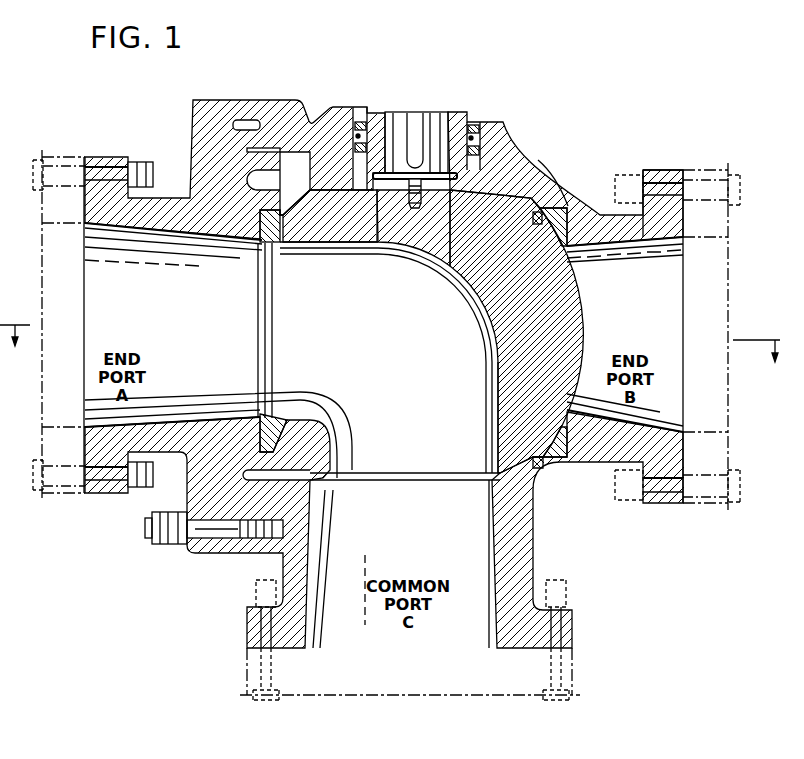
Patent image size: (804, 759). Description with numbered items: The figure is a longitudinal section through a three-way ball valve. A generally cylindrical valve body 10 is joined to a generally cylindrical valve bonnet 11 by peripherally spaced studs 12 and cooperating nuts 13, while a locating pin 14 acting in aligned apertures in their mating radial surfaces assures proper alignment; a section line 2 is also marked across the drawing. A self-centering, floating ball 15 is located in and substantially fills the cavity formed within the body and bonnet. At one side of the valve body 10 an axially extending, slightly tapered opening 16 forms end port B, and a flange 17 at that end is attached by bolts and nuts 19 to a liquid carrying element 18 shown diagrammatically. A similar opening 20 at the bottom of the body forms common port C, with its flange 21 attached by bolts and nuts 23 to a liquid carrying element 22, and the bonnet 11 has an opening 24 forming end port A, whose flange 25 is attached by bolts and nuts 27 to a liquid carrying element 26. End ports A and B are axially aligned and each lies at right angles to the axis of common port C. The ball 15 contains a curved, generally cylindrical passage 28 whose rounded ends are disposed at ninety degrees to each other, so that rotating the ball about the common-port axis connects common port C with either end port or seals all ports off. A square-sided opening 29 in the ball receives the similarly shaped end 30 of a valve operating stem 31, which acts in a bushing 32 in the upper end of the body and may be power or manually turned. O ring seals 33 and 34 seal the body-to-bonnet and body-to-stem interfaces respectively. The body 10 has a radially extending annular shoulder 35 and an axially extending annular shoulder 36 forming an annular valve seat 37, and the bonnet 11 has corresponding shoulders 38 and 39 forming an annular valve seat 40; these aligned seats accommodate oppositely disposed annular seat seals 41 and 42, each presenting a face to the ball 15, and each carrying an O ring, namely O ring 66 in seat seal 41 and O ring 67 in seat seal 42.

The section line 2- 2 is at (390, 355).
The valve body 10 is at (568, 206).
The valve bonnet 11 is at (192, 123).
The studs 12 is at (252, 545).
The nuts 13 is at (175, 546).
The locating pin 14 is at (256, 121).
The ball 15 is at (570, 290).
The opening 16 is at (648, 328).
The flange 17 is at (648, 170).
The liquid carrying element 18 is at (730, 264).
The bolts and nuts 19 is at (744, 181).
The opening 20 is at (427, 553).
The flange 21 is at (573, 628).
The liquid carrying element 22 is at (331, 701).
The bolts and nuts 23 is at (262, 700).
The opening 24 is at (170, 311).
The flange 25 is at (97, 157).
The liquid carrying element 26 is at (40, 403).
The bolts and nuts 27 is at (33, 168).
The passage 28 is at (365, 350).
The square-sided opening 29 is at (442, 257).
The end of valve operating stem 30 is at (392, 240).
The valve operating stem 31 is at (482, 121).
The bushing 32 is at (367, 112).
The seal 33 is at (300, 516).
The seal 34 is at (342, 107).
The radially extending annular shoulder 35 is at (584, 239).
The axially extending annular shoulder 36 is at (548, 181).
The annular valve seat 37 is at (573, 207).
The radially extending annular shoulder 38 is at (264, 217).
The axially extending annular shoulder 39 is at (262, 212).
The annular valve seat 40 is at (258, 214).
The seat seal 41 is at (567, 426).
The seat seal 42 is at (286, 418).
The O ring seal 66 is at (550, 462).
The O ring seal 67 is at (268, 206).